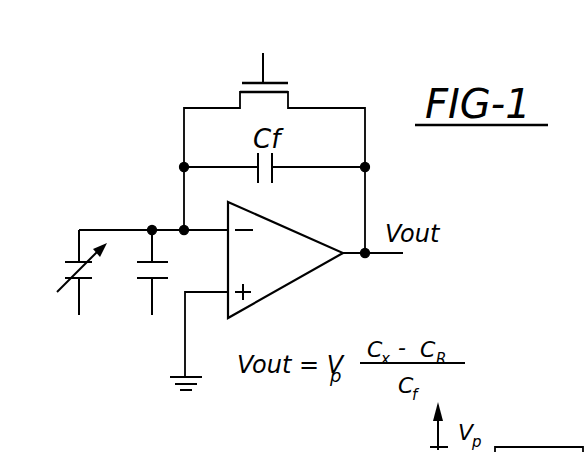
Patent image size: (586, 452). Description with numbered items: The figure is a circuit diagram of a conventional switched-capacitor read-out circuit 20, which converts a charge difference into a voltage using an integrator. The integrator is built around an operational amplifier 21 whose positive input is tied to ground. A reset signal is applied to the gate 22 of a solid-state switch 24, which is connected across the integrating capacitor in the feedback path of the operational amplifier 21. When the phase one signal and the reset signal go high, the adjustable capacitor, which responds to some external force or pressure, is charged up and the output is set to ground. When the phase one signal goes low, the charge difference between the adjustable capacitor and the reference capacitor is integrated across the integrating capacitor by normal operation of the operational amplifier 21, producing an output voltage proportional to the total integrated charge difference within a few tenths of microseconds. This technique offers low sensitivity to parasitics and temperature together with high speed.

The circuit 20 is at (128, 369).
The operational amplifier 21 is at (298, 227).
The gate 22 is at (258, 70).
The solid-state switch 24 is at (226, 80).